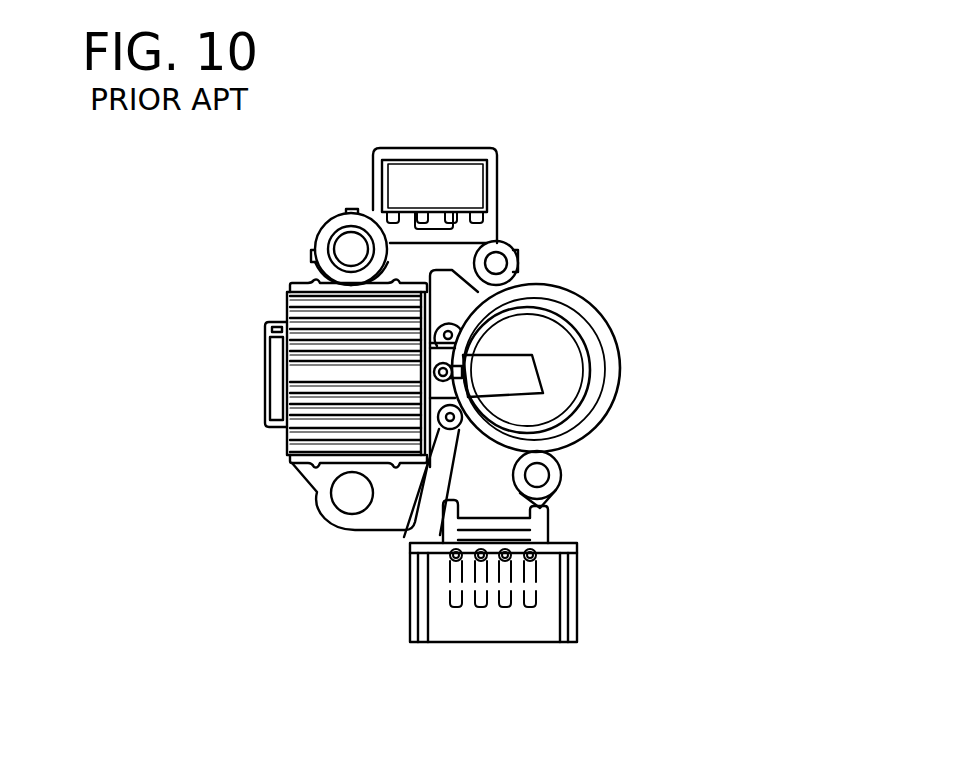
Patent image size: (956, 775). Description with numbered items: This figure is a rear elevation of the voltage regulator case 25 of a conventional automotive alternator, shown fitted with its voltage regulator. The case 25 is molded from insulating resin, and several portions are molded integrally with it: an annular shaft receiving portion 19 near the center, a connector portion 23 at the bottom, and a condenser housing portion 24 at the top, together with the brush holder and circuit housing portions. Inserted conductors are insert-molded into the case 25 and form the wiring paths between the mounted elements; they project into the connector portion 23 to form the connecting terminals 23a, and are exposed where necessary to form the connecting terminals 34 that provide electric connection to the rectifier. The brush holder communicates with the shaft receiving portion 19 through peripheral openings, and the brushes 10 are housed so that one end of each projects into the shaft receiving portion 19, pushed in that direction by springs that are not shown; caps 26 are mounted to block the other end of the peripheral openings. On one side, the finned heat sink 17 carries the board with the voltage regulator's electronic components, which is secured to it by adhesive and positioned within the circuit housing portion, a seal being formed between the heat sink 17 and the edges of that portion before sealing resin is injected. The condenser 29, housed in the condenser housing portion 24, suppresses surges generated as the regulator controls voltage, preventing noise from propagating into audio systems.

The brushes 10 is at (518, 370).
The heat sink 17 is at (320, 313).
The annular shaft receiving portion 19 is at (620, 350).
The connector portion 23 is at (578, 600).
The connecting terminals 23a is at (456, 607).
The condenser housing portion 24 is at (375, 186).
The voltage regulator case 25 is at (312, 233).
The caps 26 is at (263, 377).
The condenser 29 is at (450, 186).
The connecting terminals 34 is at (518, 257).